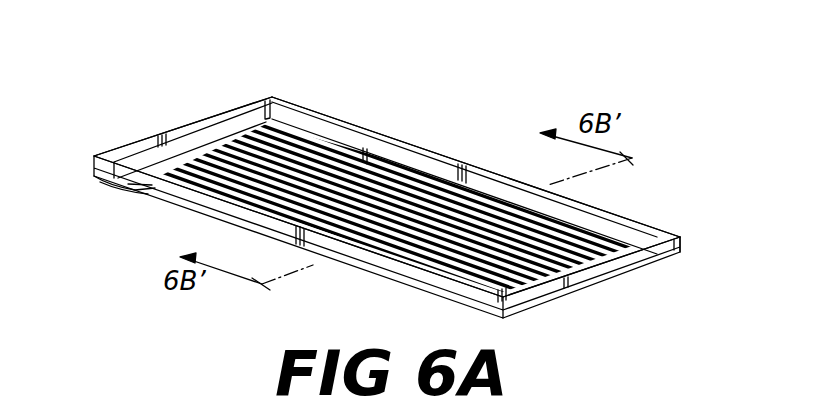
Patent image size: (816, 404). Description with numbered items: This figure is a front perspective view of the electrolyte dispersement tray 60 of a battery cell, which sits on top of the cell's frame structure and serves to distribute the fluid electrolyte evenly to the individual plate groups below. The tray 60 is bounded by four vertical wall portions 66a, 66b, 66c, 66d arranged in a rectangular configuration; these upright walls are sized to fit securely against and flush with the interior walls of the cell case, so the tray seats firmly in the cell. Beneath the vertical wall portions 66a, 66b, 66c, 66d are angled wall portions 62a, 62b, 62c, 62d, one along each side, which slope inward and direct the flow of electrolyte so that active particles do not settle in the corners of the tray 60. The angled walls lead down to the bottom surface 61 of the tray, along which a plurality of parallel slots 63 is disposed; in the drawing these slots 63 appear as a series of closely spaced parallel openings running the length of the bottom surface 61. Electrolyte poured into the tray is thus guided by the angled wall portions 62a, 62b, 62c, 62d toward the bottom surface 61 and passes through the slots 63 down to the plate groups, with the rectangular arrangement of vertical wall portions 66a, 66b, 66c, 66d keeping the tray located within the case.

The dispersement tray 60 is at (208, 92).
The bottom surface 61 is at (340, 153).
The angled wall portion 62a is at (380, 276).
The angled wall portion 62b is at (597, 230).
The angled wall portion 62c is at (583, 287).
The angled wall portion 62d is at (197, 150).
The slot 63 is at (266, 135).
The vertical wall portion 66a is at (131, 186).
The vertical wall portion 66b is at (433, 160).
The vertical wall portion 66c is at (681, 251).
The vertical wall portion 66d is at (137, 147).